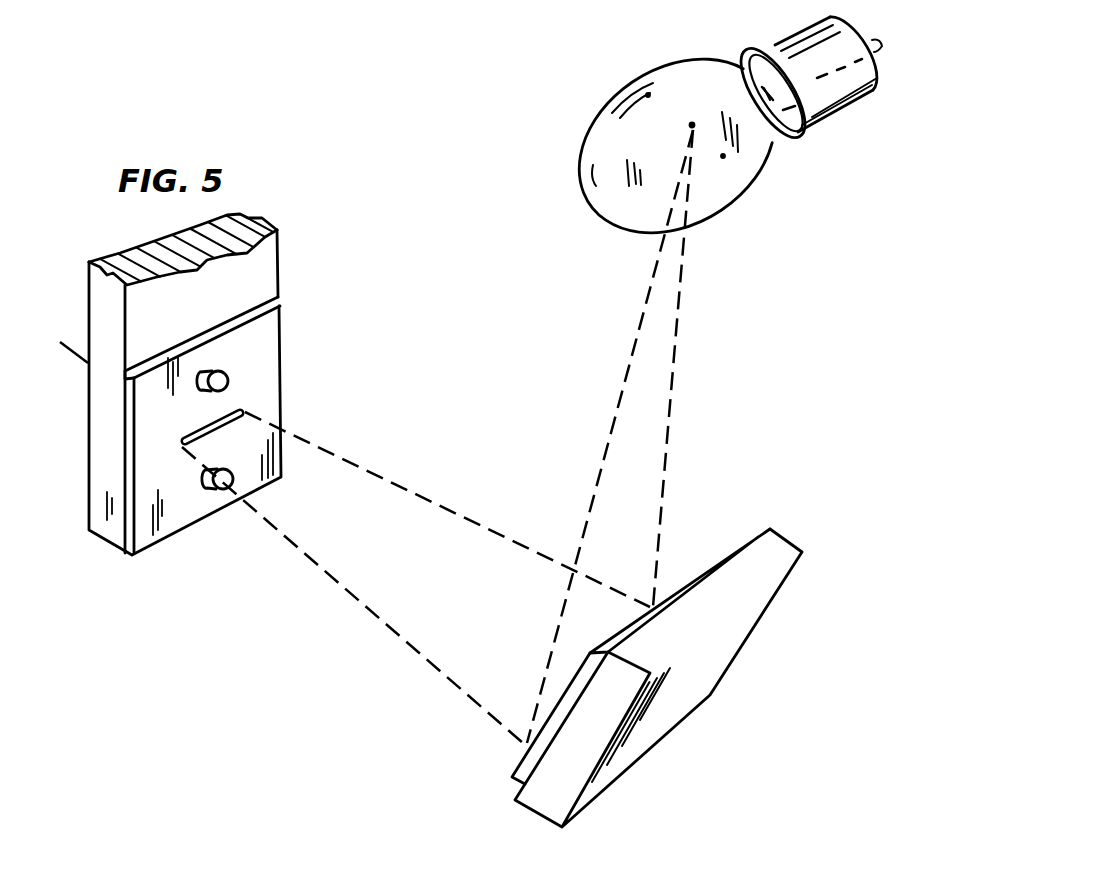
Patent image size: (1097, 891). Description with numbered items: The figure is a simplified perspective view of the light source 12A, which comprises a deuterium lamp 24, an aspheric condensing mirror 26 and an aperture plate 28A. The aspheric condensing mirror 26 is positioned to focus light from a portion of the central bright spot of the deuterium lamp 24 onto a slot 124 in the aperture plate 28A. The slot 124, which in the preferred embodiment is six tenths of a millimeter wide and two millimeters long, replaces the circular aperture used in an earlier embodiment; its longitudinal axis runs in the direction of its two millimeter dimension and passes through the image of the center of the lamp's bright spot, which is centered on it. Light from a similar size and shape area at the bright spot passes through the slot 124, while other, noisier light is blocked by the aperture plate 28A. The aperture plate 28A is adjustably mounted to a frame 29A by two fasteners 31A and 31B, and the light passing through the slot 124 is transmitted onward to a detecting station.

The light source 12A is at (259, 659).
The deuterium lamp 24 is at (745, 165).
The aspheric condensing mirror 26 is at (723, 635).
The aperture plate 28A is at (262, 330).
The frame 29A is at (260, 272).
The fastener 31A is at (228, 380).
The fastener 31B is at (224, 481).
The slot 124 is at (197, 428).